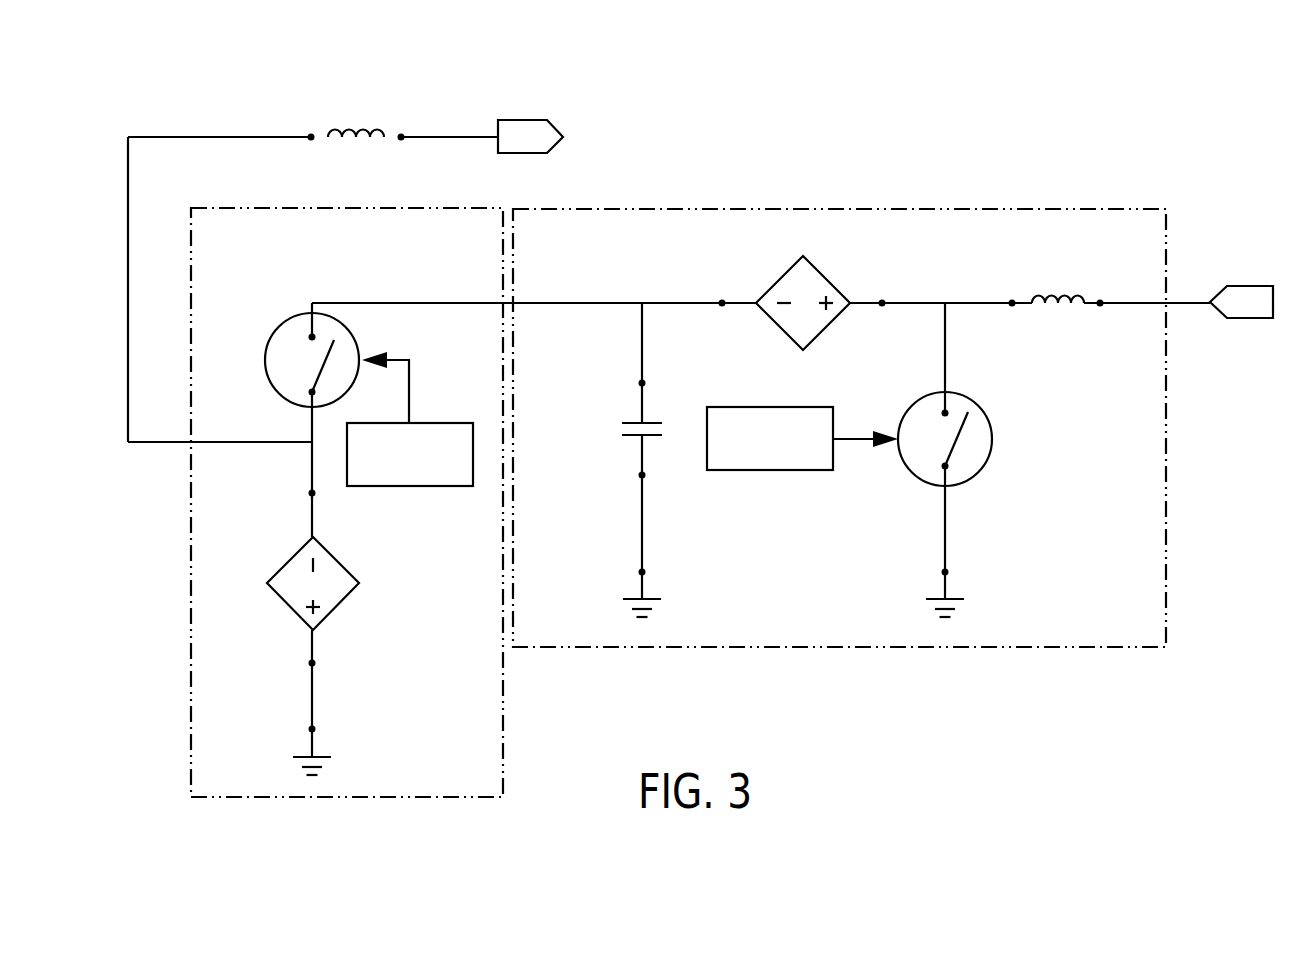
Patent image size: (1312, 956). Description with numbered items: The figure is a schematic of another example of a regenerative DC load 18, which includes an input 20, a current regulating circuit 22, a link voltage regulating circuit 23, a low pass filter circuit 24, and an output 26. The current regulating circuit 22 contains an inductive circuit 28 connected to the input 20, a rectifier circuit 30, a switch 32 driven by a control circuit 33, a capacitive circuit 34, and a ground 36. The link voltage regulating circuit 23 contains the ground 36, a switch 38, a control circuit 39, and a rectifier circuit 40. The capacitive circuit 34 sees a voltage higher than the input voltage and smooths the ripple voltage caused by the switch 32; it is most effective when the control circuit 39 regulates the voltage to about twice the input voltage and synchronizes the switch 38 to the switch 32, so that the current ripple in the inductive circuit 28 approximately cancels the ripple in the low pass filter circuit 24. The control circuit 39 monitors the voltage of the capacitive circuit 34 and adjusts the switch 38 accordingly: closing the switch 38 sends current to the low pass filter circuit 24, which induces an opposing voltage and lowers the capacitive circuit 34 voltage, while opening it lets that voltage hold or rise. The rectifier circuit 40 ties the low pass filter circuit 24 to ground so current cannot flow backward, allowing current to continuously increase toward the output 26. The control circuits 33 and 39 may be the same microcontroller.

The regenerative DC load 18 is at (1212, 96).
The input 20 is at (1245, 286).
The current regulating circuit 22 is at (993, 209).
The link voltage regulating circuit 23 is at (328, 208).
The low pass filter circuit 24 is at (330, 127).
The output 26 is at (548, 121).
The inductive circuit 28 is at (1033, 292).
The rectifier circuit 30 is at (782, 275).
The switch 32 is at (972, 478).
The control circuit 33 is at (773, 407).
The capacitive circuit 34 is at (637, 425).
The ground 36 is at (310, 755).
The switch 38 is at (300, 312).
The control circuit 39 is at (410, 487).
The rectifier circuit 40 is at (332, 612).